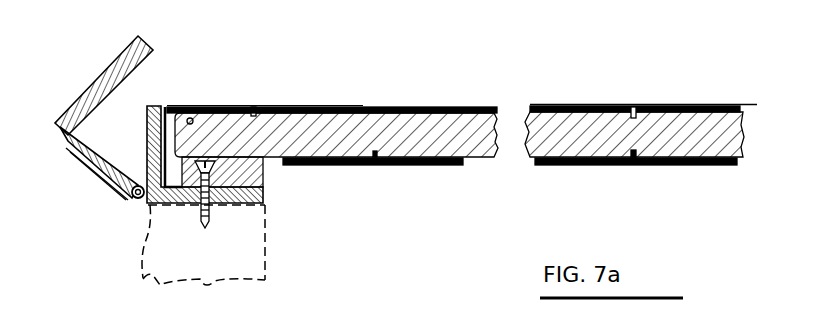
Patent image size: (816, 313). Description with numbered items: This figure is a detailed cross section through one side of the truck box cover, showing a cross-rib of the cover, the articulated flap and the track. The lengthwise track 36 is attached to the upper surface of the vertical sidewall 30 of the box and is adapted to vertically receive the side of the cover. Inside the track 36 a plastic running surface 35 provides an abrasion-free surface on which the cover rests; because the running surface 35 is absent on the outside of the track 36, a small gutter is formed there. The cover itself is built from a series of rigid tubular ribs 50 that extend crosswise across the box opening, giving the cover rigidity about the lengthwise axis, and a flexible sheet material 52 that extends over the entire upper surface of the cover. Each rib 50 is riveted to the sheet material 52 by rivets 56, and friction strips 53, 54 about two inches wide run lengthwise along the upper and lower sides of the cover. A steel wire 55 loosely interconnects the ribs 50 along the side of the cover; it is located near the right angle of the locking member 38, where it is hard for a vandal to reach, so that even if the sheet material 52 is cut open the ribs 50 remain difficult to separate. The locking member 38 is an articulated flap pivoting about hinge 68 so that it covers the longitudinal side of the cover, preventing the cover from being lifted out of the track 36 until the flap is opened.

The vertical sidewall 30 is at (240, 247).
The plastic running surface 35 is at (265, 180).
The lengthwise track 36 is at (148, 242).
The locking member 38 is at (77, 97).
The rigid tubular rib 50 is at (456, 110).
The flexible sheet material 52 is at (406, 108).
The friction strip 53 is at (303, 107).
The friction strip 54 is at (440, 166).
The steel wire 55 is at (206, 107).
The rivet 56 is at (635, 107).
The hinge 68 is at (132, 197).